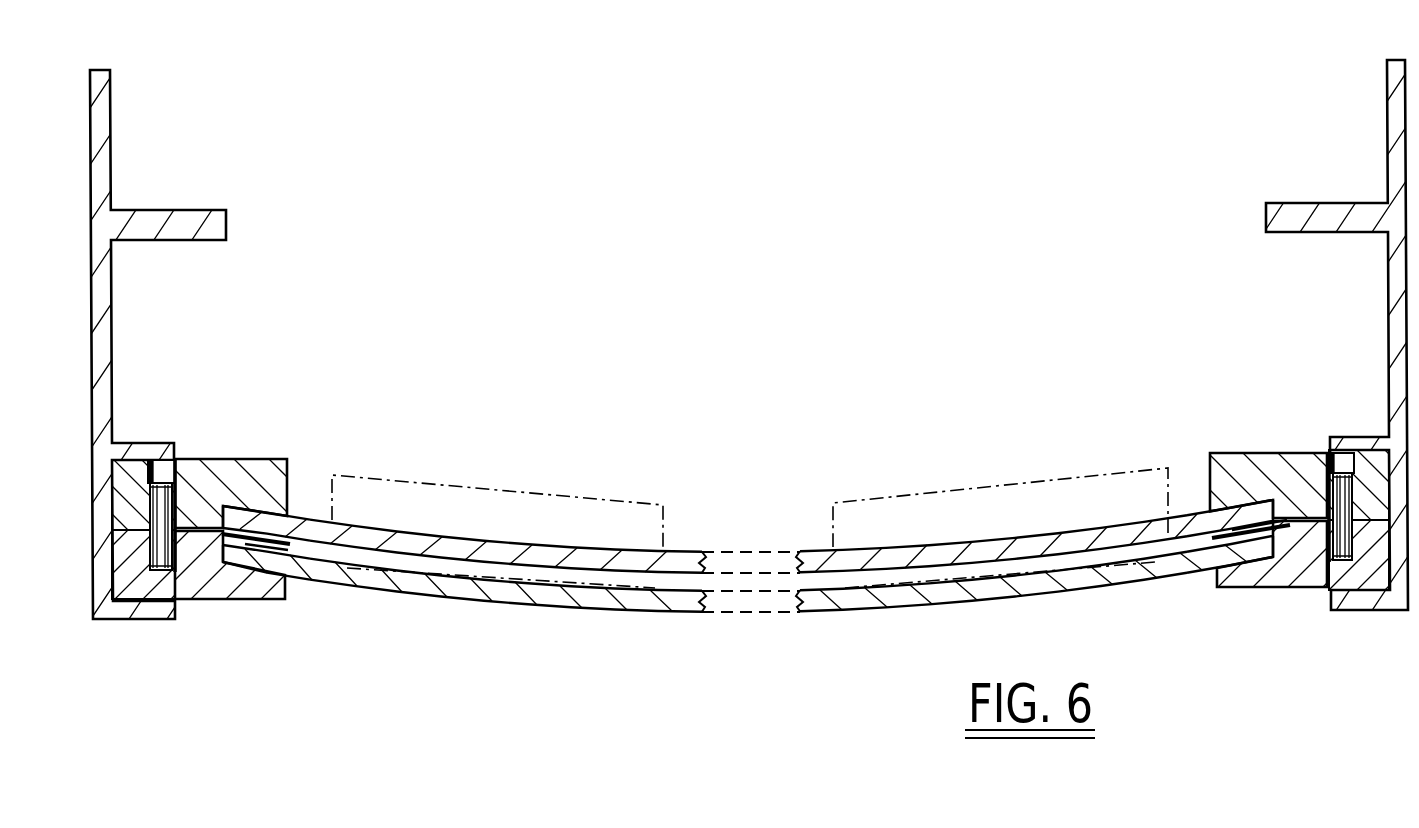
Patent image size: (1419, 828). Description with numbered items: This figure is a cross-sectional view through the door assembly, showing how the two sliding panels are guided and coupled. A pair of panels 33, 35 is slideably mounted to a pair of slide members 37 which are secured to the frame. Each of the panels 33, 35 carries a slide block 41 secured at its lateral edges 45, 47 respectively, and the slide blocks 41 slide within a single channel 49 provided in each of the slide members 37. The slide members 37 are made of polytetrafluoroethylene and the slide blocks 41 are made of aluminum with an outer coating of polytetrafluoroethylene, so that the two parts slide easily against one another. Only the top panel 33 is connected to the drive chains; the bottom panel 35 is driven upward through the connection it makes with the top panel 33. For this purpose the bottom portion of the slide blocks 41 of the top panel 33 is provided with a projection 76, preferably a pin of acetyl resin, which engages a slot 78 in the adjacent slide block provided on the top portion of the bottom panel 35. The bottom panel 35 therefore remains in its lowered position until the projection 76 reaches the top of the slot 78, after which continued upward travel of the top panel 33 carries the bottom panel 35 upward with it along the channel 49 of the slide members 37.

The panel 33 is at (674, 553).
The panel 35 is at (820, 610).
The slide member 37 is at (142, 445).
The slide block 41 is at (285, 467).
The lateral edge 45 is at (250, 517).
The lateral edge 47 is at (240, 560).
The channel 49 is at (170, 593).
The projection 76 is at (162, 498).
The slot 78 is at (138, 588).